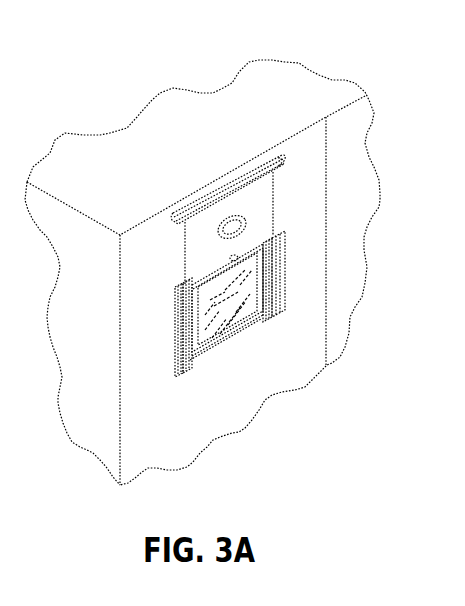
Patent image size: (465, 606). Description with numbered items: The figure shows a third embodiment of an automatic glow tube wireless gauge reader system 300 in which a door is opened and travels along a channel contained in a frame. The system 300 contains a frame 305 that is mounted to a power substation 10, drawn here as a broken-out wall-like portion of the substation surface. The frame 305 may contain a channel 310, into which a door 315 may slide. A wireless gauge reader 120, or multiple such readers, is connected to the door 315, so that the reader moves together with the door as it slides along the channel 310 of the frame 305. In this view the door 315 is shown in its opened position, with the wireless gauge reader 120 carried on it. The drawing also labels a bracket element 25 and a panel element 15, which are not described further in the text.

The power substation 10 is at (315, 88).
The wireless gauge reader system 300 is at (162, 291).
The door 315 is at (225, 175).
The wireless gauge reader 120 is at (228, 215).
The left mounting bracket 25 is at (205, 295).
The frame 305 is at (280, 248).
The channel 310 is at (265, 293).
The display panel 15 is at (228, 300).